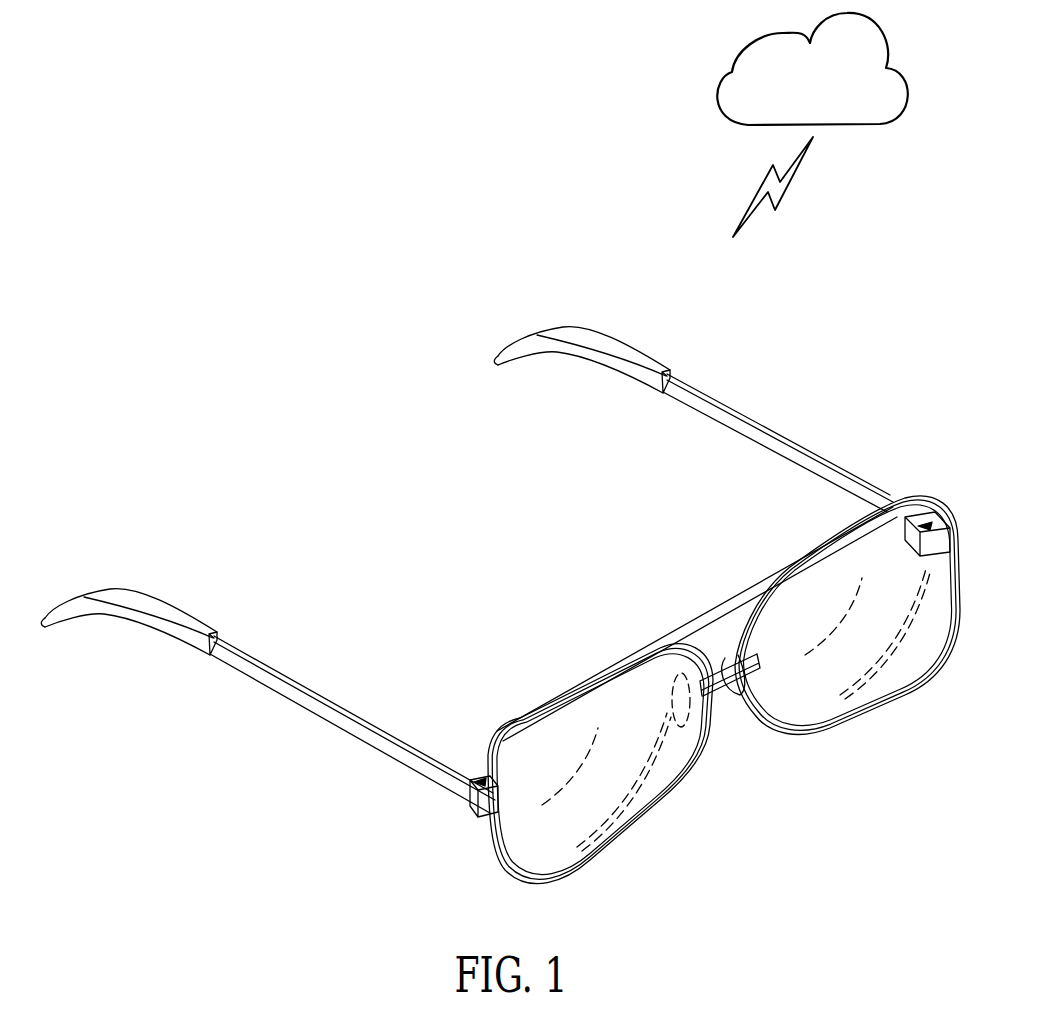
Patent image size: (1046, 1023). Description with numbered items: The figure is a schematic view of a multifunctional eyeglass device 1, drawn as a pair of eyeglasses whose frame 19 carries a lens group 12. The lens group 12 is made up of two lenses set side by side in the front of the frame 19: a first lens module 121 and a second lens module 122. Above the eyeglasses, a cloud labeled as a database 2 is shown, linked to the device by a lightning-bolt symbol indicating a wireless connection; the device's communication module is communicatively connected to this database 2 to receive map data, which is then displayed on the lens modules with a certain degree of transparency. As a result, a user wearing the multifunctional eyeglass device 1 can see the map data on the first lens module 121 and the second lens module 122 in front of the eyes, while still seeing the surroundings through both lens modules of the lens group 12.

The multifunctional eyeglass device 1 is at (500, 610).
The database 2 is at (731, 73).
The lens group 12 is at (724, 720).
The first lens module 121 is at (850, 675).
The second lens module 122 is at (600, 780).
The frame 19 is at (808, 465).